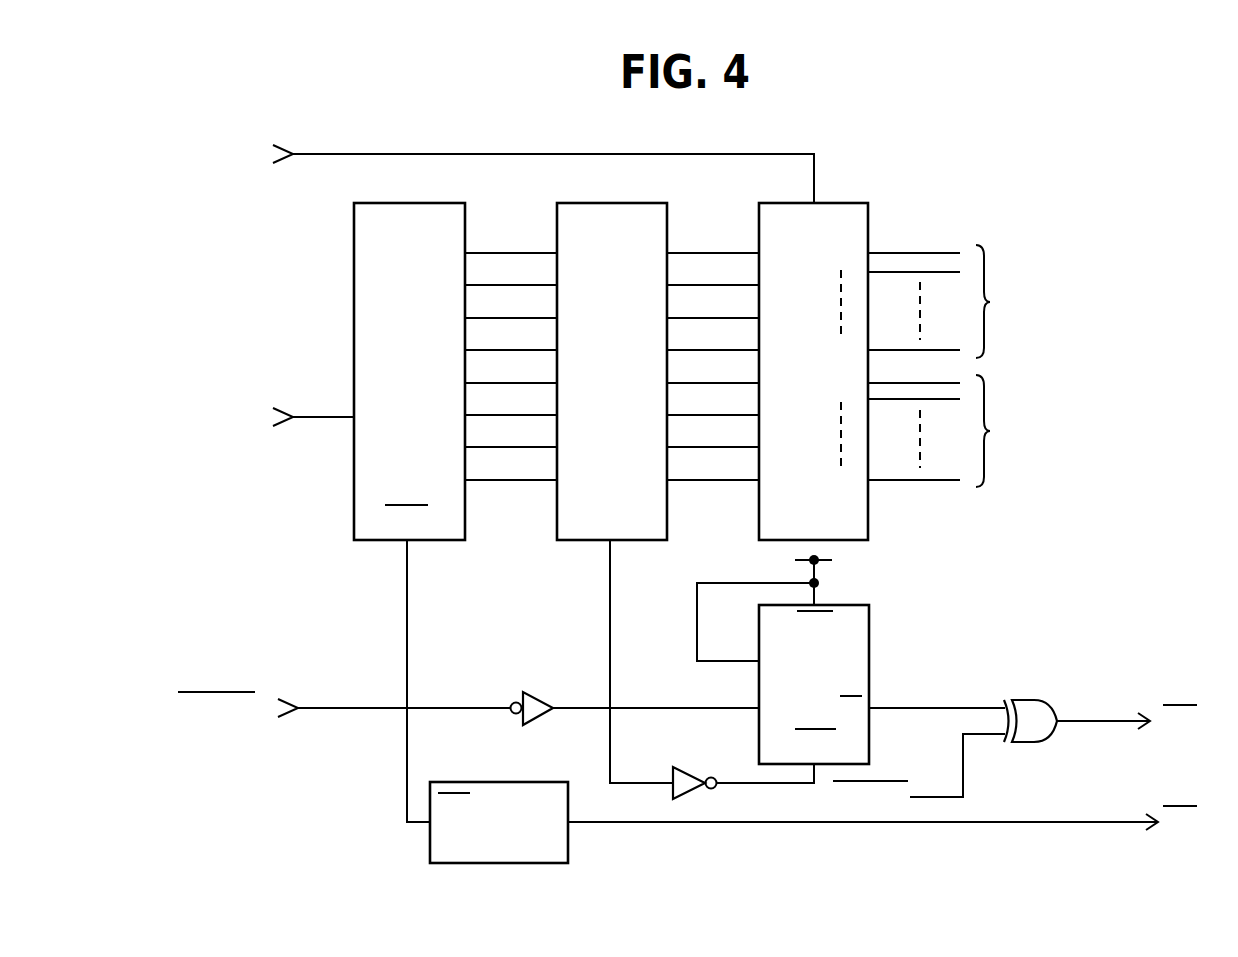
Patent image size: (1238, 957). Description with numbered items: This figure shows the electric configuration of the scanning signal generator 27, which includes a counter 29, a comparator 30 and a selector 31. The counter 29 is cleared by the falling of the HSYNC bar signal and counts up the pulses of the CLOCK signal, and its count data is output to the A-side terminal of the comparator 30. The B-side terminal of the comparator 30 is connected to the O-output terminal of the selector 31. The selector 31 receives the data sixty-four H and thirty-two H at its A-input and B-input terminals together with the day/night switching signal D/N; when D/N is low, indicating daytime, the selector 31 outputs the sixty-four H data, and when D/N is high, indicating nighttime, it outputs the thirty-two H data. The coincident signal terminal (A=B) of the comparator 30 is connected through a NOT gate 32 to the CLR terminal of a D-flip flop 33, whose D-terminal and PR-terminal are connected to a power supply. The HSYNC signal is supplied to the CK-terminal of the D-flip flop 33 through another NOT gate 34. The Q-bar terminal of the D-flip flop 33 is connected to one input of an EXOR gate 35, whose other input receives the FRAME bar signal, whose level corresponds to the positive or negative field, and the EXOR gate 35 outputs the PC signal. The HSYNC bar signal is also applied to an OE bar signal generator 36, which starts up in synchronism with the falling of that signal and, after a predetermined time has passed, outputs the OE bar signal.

The scanning signal generator 27 is at (1024, 203).
The counter 29 is at (430, 203).
The comparator 30 is at (620, 203).
The selector 31 is at (826, 203).
The NOT gate 32 is at (683, 775).
The D-flip flop 33 is at (852, 605).
The NOT gate 34 is at (530, 693).
The EXOR gate 35 is at (1035, 700).
The OE bar signal generator 36 is at (568, 797).